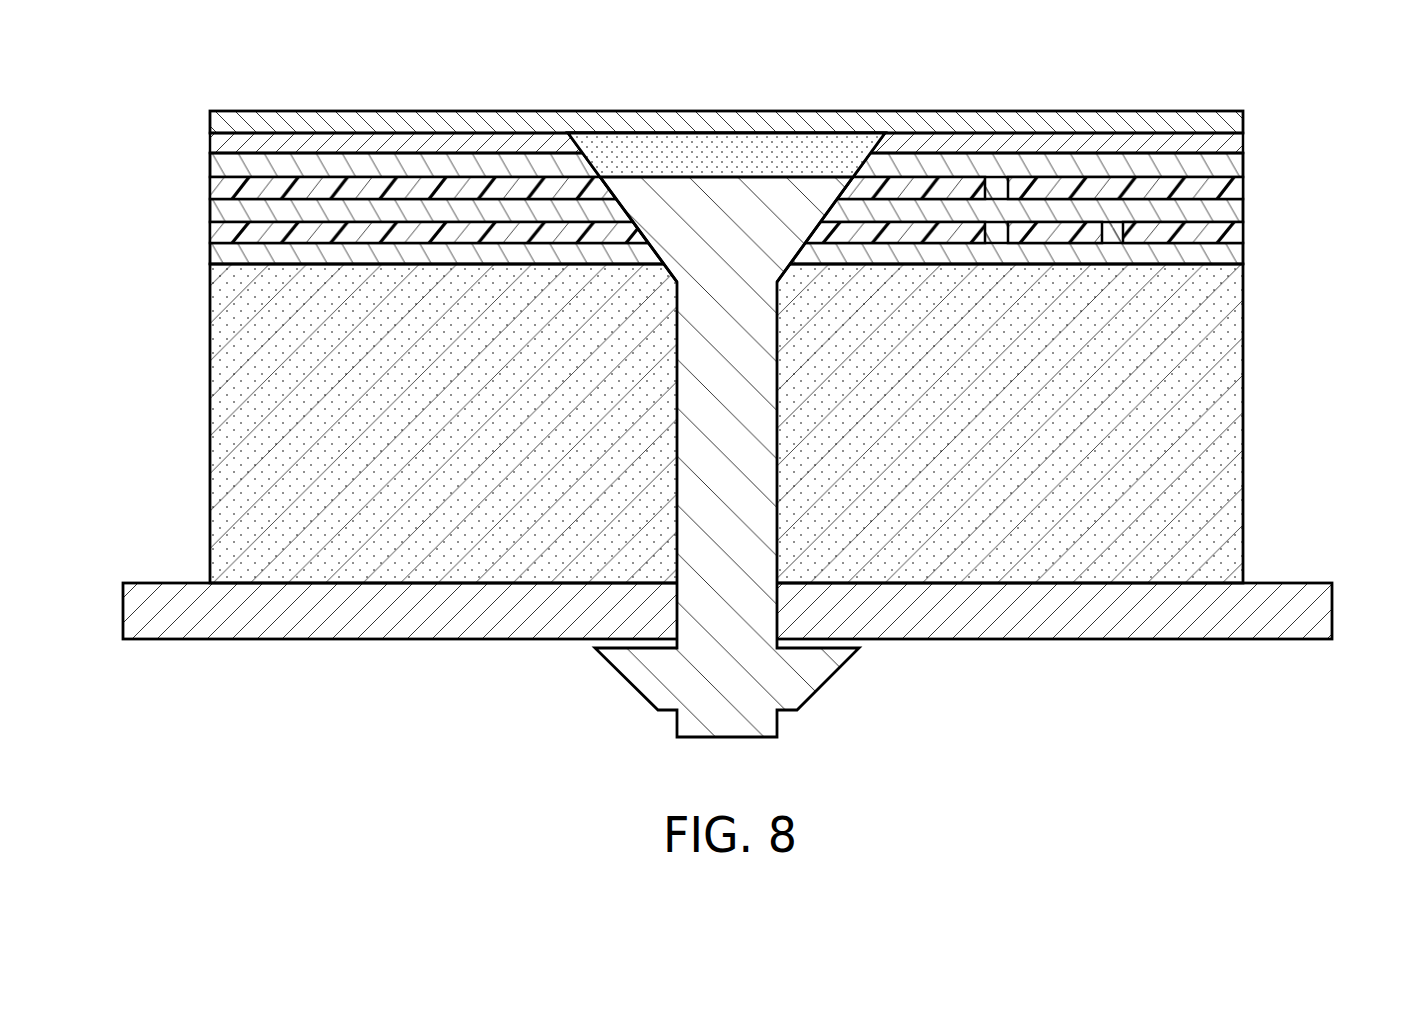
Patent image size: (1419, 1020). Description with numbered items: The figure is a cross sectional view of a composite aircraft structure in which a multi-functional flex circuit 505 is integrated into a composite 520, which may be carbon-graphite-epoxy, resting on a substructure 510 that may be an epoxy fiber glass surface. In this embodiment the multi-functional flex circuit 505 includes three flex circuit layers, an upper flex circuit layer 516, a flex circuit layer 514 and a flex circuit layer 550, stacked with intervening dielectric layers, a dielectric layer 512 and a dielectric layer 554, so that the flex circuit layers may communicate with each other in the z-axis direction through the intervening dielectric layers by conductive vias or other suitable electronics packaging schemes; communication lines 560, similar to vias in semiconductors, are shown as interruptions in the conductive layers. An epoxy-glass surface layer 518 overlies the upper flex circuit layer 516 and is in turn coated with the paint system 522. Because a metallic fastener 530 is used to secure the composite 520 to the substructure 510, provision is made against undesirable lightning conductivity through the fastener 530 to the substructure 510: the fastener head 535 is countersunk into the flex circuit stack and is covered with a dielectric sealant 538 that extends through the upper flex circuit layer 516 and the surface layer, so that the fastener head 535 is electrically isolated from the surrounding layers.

The multi-functional flex circuit 505 is at (717, 192).
The substructure 510 is at (1322, 610).
The flex circuit layer 512 is at (1235, 208).
The dielectric layer 514 is at (372, 187).
The upper flex circuit layer 516 is at (1235, 168).
The epoxy-glass surface layer 518 is at (218, 140).
The composite 520 is at (1233, 420).
The paint system 522 is at (235, 116).
The metallic fastener 530 is at (768, 418).
The fastener head 535 is at (803, 250).
The dielectric sealant 538 is at (768, 145).
The flex circuit layer 550 is at (1235, 253).
The dielectric layer 554 is at (418, 232).
The communication lines 560 is at (1000, 185).